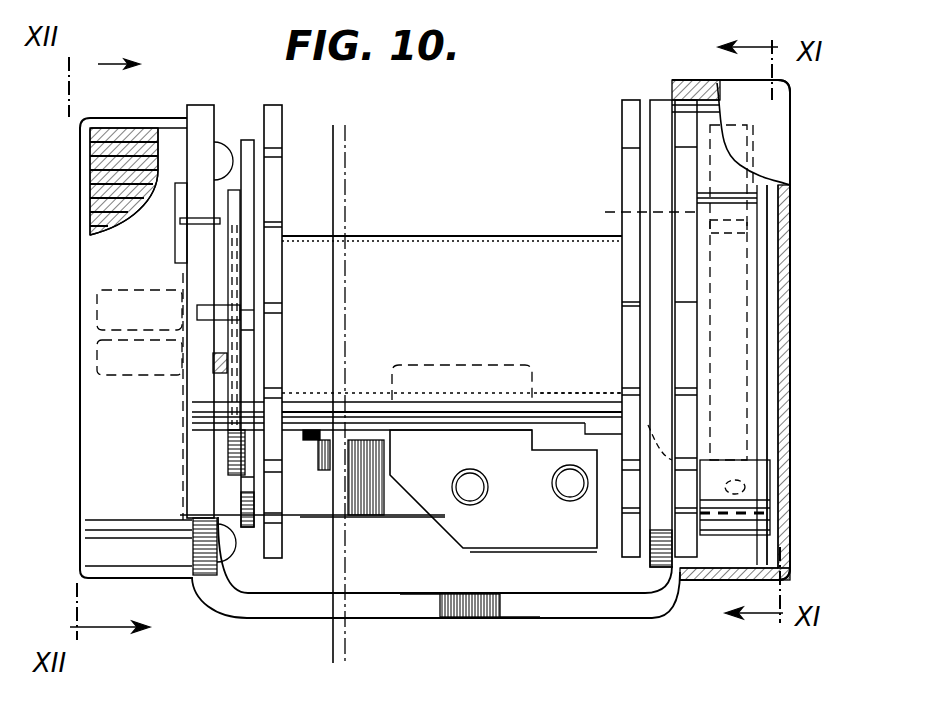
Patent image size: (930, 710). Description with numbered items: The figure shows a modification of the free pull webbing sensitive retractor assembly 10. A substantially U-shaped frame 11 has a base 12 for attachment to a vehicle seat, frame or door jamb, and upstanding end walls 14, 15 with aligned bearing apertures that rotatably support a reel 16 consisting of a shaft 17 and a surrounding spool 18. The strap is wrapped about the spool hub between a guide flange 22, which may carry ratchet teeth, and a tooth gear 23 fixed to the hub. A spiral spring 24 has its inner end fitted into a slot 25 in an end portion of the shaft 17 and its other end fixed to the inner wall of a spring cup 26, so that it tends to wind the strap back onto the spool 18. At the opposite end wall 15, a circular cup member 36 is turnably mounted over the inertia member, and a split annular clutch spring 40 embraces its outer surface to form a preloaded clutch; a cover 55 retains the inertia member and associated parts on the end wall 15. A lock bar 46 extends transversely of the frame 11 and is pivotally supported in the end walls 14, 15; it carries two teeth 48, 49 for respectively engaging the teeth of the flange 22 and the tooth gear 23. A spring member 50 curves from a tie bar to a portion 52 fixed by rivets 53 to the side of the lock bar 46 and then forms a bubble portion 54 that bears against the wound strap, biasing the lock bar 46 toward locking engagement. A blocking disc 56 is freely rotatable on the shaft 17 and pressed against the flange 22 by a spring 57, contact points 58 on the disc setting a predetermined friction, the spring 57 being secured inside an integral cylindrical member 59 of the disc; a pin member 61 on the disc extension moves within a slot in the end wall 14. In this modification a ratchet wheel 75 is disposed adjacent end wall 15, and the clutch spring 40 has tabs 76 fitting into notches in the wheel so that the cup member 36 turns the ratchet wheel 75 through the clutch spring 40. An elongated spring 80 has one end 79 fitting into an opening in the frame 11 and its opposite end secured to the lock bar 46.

The free pull webbing sensitive retractor assembly 10 is at (808, 156).
The frame 11 is at (245, 619).
The base 12 is at (522, 606).
The end wall 14 is at (200, 112).
The end wall 15 is at (650, 106).
The reel 16 is at (531, 228).
The shaft 17 is at (115, 313).
The spool 18 is at (410, 247).
The guide flange 22 is at (270, 136).
The tooth gear 23 is at (622, 136).
The spiral spring 24 is at (110, 144).
The slot 25 is at (153, 330).
The spring cup 26 is at (80, 489).
The cup member 36 is at (760, 447).
The clutch spring 40 is at (735, 299).
The lock bar 46 is at (362, 512).
The tooth 48 is at (298, 420).
The tooth 49 is at (581, 374).
The spring member 50 is at (452, 524).
The portion 52 is at (525, 549).
The rivets 53 is at (560, 467).
The bubble portion 54 is at (452, 377).
The cover 55 is at (773, 121).
The blocking disc 56 is at (247, 142).
The spring 57 is at (217, 228).
The contact points 58 is at (260, 520).
The cylindrical member 59 is at (240, 192).
The pin member 61 is at (200, 350).
The ratchet wheel 75 is at (688, 112).
The tabs 76 is at (748, 233).
The end 79 is at (606, 212).
The elongated spring 80 is at (735, 361).